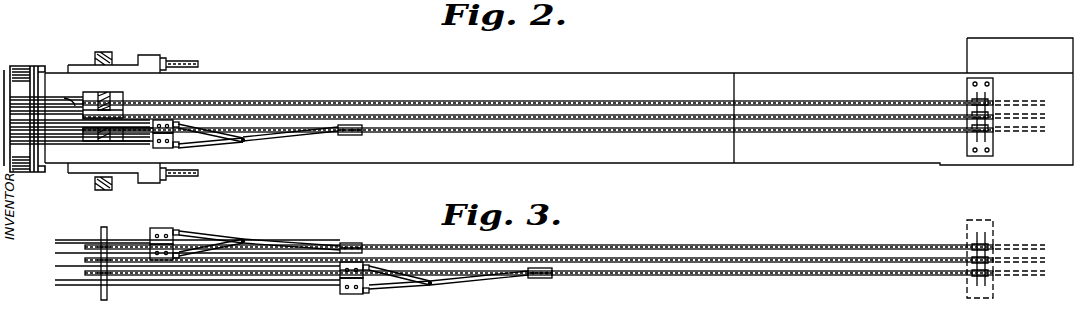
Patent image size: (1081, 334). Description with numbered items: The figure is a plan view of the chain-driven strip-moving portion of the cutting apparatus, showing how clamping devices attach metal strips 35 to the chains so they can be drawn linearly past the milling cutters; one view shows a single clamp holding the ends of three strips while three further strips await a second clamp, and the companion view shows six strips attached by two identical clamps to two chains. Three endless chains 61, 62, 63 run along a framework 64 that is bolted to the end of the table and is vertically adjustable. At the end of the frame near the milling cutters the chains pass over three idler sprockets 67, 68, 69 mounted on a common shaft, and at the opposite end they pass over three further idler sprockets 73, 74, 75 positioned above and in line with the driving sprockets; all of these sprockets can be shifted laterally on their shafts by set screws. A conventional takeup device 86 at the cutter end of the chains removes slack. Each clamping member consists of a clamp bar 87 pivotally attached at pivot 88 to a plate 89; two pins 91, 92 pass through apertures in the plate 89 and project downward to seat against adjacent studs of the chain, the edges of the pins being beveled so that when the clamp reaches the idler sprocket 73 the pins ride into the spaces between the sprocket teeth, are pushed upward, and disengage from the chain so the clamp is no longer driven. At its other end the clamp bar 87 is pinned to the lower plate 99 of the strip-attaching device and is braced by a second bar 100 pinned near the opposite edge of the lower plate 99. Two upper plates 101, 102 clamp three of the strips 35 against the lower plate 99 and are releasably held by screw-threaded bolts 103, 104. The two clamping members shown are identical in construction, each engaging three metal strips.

In FIG. 2, the metal strip 35 is at (66, 112).
In FIG. 3, the metal strip 35 is at (54, 240).
In FIG. 2, the endless chain 61 is at (606, 101).
In FIG. 3, the endless chain 61 is at (645, 245).
In FIG. 2, the endless chain 62 is at (650, 115).
In FIG. 3, the endless chain 62 is at (680, 258).
In FIG. 2, the endless chain 63 is at (690, 128).
In FIG. 3, the endless chain 63 is at (708, 271).
In FIG. 2, the framework 64 is at (778, 73).
In FIG. 2, the idler sprocket 67 is at (92, 141).
In FIG. 2, the idler sprocket 68 is at (118, 116).
In FIG. 2, the idler sprocket 69 is at (110, 108).
In FIG. 2, the idler sprocket 73 is at (976, 132).
In FIG. 3, the idler sprocket 73 is at (976, 274).
In FIG. 2, the idler sprocket 74 is at (993, 122).
In FIG. 3, the idler sprocket 74 is at (993, 264).
In FIG. 2, the idler sprocket 75 is at (993, 103).
In FIG. 3, the idler sprocket 75 is at (993, 247).
In FIG. 2, the takeup device 86 is at (145, 62).
In FIG. 2, the clamp bar 87 is at (300, 136).
In FIG. 3, the clamp bar 87 is at (222, 238).
In FIG. 2, the pivot 88 is at (343, 137).
In FIG. 3, the pivot 88 is at (532, 279).
In FIG. 2, the plate 89 is at (359, 137).
In FIG. 3, the plate 89 is at (356, 243).
In FIG. 3, the pin 91 is at (539, 268).
In FIG. 3, the pin 92 is at (548, 268).
In FIG. 2, the lower plate 99 is at (180, 147).
In FIG. 3, the lower plate 99 is at (178, 233).
In FIG. 2, the brace bar 100 is at (244, 142).
In FIG. 3, the brace bar 100 is at (208, 260).
In FIG. 2, the upper plate 101 is at (168, 148).
In FIG. 3, the upper plate 101 is at (158, 228).
In FIG. 2, the upper plate 102 is at (170, 135).
In FIG. 3, the upper plate 102 is at (163, 262).
In FIG. 2, the screw-threaded bolt 103 is at (160, 121).
In FIG. 3, the screw-threaded bolt 103 is at (344, 263).
In FIG. 2, the screw-threaded bolt 104 is at (158, 140).
In FIG. 3, the screw-threaded bolt 104 is at (342, 291).